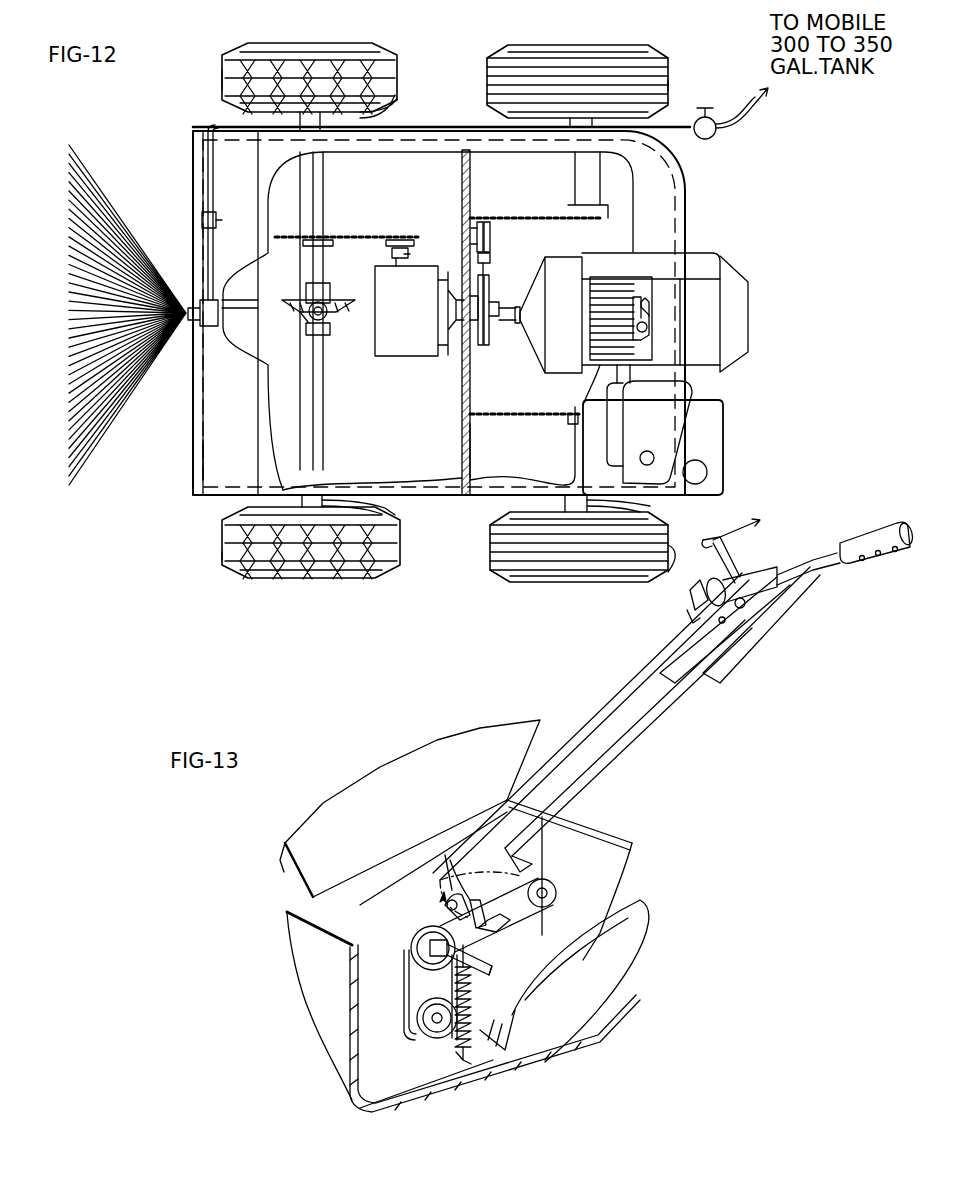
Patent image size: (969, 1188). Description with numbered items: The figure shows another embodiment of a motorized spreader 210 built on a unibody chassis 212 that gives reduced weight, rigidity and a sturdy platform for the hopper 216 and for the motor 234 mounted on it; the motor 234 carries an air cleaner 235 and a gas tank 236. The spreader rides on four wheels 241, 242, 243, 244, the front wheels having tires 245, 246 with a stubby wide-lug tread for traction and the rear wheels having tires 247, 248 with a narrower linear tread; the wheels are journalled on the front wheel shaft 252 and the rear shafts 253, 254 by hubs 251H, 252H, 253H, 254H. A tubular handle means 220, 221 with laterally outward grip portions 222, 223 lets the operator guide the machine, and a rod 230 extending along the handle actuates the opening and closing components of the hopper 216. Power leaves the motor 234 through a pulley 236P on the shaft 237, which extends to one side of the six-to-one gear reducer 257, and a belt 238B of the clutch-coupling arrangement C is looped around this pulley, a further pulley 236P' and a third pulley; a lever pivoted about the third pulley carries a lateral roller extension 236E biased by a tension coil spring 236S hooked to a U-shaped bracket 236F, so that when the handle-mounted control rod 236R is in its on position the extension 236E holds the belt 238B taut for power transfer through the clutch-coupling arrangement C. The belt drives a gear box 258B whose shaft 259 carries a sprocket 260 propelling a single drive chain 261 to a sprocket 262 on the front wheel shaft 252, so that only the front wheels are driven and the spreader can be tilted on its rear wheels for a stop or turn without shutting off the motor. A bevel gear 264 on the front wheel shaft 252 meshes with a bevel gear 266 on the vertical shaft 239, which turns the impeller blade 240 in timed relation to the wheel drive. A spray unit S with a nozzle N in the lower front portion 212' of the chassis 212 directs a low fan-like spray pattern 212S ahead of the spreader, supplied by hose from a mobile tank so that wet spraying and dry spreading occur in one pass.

In FIG. 12, the spreader 210 is at (718, 178).
In FIG. 13, the spreader 210 is at (640, 802).
In FIG. 12, the unibody chassis 212 is at (453, 113).
In FIG. 12, the spray pattern 212S is at (98, 212).
In FIG. 12, the lower front portion 212' is at (167, 460).
In FIG. 13, the hopper 216 is at (358, 795).
In FIG. 13, the tubular handle means 220 is at (748, 654).
In FIG. 13, the tubular handle means 221 is at (712, 660).
In FIG. 13, the handle grip portion 222 is at (786, 595).
In FIG. 13, the handle grip portion 223 is at (884, 558).
In FIG. 13, the rod 230 is at (560, 748).
In FIG. 12, the motor 234 is at (652, 270).
In FIG. 13, the motor 234 is at (560, 970).
In FIG. 12, the air cleaner 235 is at (675, 410).
In FIG. 12, the gas tank 236 is at (720, 442).
In FIG. 12, the pulley 236P is at (516, 286).
In FIG. 13, the pulley 236P is at (419, 943).
In FIG. 13, the further pulley 236P' is at (458, 1065).
In FIG. 12, the lateral roller extension 236E is at (505, 232).
In FIG. 13, the lateral roller extension 236E is at (448, 870).
In FIG. 13, the control rod 236R is at (658, 708).
In FIG. 13, the tension coil spring 236S is at (512, 1010).
In FIG. 13, the U-shaped bracket 236F is at (492, 1058).
In FIG. 12, the shaft 237 is at (508, 326).
In FIG. 13, the shaft 237 is at (420, 977).
In FIG. 13, the belt 238B is at (410, 990).
In FIG. 12, the vertical shaft 239 is at (308, 322).
In FIG. 12, the impeller blade 240 is at (248, 318).
In FIG. 12, the wheel 241 is at (285, 575).
In FIG. 12, the wheel 242 is at (285, 48).
In FIG. 12, the wheel 243 is at (534, 578).
In FIG. 12, the wheel 244 is at (553, 56).
In FIG. 12, the tire 245 is at (222, 552).
In FIG. 12, the tire 246 is at (222, 76).
In FIG. 12, the tire 247 is at (672, 575).
In FIG. 12, the tire 248 is at (668, 86).
In FIG. 12, the hub 251H is at (395, 512).
In FIG. 12, the front wheel shaft 252 is at (312, 185).
In FIG. 12, the hub 252H is at (392, 116).
In FIG. 12, the shaft 253 is at (568, 442).
In FIG. 12, the hub 253H is at (650, 508).
In FIG. 13, the hub 253H is at (736, 529).
In FIG. 12, the shaft 254 is at (590, 180).
In FIG. 12, the hub 254H is at (583, 122).
In FIG. 12, the gear reducer 257 is at (560, 272).
In FIG. 13, the gear reducer 257 is at (560, 935).
In FIG. 12, the gear box 258B is at (398, 350).
In FIG. 12, the shaft 259 is at (406, 253).
In FIG. 12, the sprocket 260 is at (410, 247).
In FIG. 12, the drive chain 261 is at (345, 240).
In FIG. 12, the sprocket 262 is at (330, 235).
In FIG. 12, the bevel gear 264 is at (343, 300).
In FIG. 12, the bevel gear 266 is at (326, 334).
In FIG. 12, the spray unit S is at (199, 130).
In FIG. 12, the nozzle N is at (207, 326).
In FIG. 12, the clutch-coupling arrangement C is at (488, 352).
In FIG. 13, the clutch-coupling arrangement C is at (428, 1063).